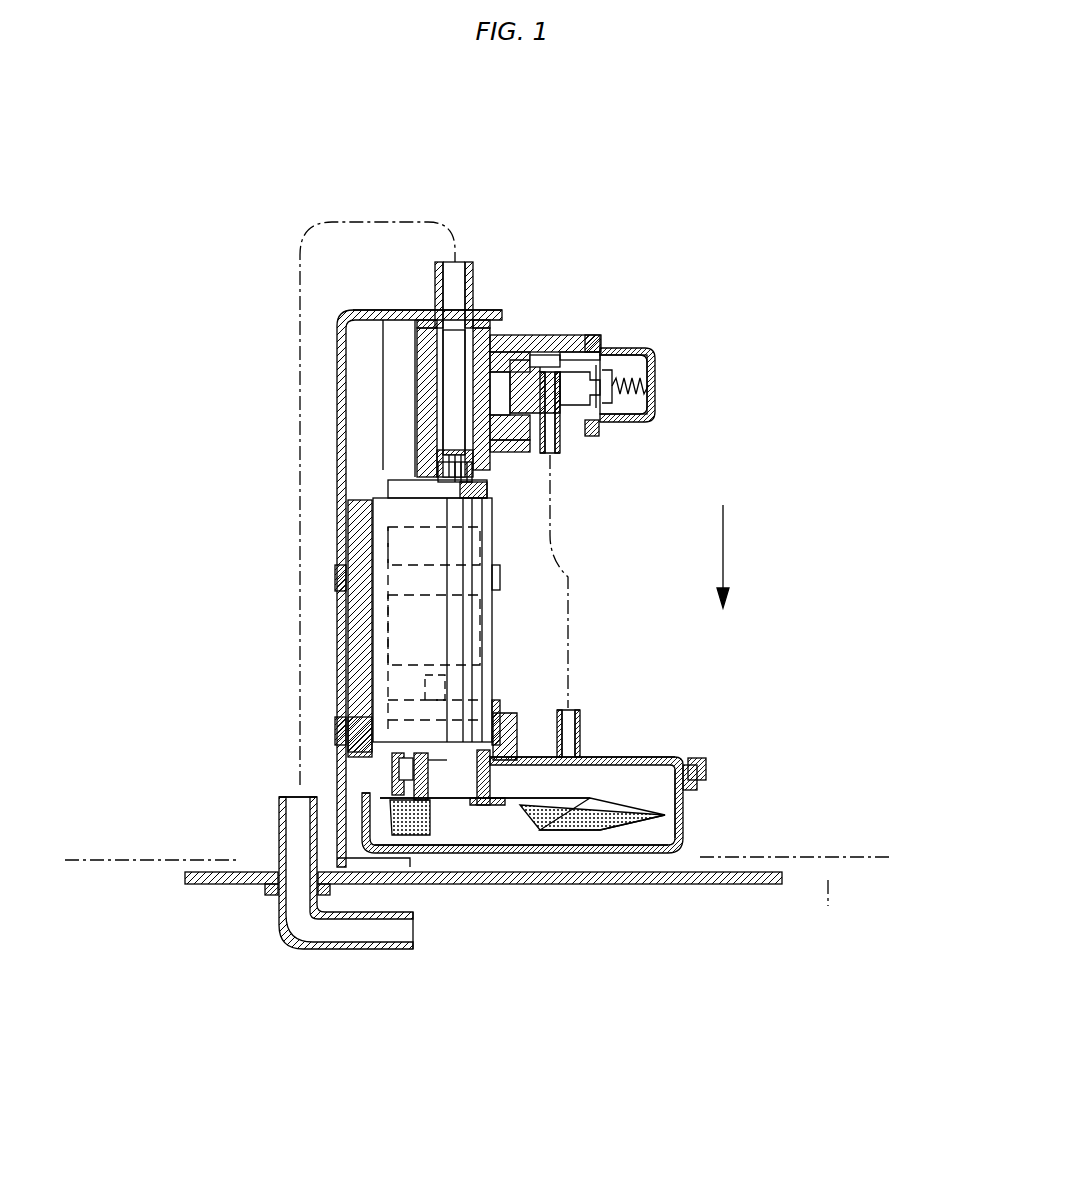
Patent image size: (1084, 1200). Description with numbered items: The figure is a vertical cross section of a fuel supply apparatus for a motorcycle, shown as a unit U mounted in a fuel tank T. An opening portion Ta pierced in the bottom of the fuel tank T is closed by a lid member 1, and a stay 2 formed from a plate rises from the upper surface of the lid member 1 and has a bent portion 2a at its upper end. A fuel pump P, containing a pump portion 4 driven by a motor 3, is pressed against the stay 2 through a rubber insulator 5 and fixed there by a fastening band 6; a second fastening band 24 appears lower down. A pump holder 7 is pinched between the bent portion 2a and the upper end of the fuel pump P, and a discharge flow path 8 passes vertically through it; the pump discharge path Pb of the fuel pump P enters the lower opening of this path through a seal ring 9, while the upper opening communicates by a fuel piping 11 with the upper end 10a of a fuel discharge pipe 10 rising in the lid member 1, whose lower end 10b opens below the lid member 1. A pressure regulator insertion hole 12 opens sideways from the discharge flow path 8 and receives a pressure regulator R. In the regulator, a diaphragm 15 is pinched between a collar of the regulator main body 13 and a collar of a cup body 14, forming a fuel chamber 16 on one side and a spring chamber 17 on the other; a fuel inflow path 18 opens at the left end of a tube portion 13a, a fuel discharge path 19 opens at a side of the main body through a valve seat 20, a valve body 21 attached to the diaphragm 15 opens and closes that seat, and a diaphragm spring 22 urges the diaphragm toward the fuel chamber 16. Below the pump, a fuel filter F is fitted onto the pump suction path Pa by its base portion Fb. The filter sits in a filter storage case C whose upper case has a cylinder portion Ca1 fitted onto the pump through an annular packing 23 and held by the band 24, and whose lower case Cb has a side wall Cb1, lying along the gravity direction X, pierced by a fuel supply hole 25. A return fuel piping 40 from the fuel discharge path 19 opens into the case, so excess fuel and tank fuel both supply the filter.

The lid member 1 is at (710, 884).
The stay 2 is at (343, 410).
The bent portion 2a is at (416, 310).
The motor 3 is at (480, 547).
The pump portion 4 is at (500, 680).
The insulator 5 is at (350, 522).
The fastening band 6 is at (336, 578).
The pump holder 7 is at (415, 352).
The discharge flow path 8 is at (430, 392).
The seal ring 9 is at (426, 448).
The fuel discharge pipe 10 is at (283, 947).
The upper end of fuel discharge pipe 10a is at (290, 797).
The lower end of fuel discharge pipe 10b is at (413, 925).
The fuel piping 11 is at (300, 437).
The pressure regulator insertion hole 12 is at (497, 314).
The regulator main body 13 is at (565, 443).
The tube portion 13a is at (518, 446).
The cup body 14 is at (645, 348).
The diaphragm 15 is at (600, 358).
The fuel chamber 16 is at (575, 342).
The spring chamber 17 is at (655, 370).
The fuel inflow path 18 is at (505, 338).
The fuel discharge path 19 is at (566, 606).
The valve seat 20 is at (548, 352).
The valve body 21 is at (610, 422).
The diaphragm spring 22 is at (655, 384).
The annular packing 23 is at (510, 720).
The fastening band 24 is at (340, 732).
The fuel supply hole 25 is at (690, 828).
The return fuel piping 40 is at (568, 585).
The filter storage case C is at (665, 757).
The cylinder portion Ca1 is at (516, 740).
The lower case Cb is at (633, 853).
The side wall Cb1 is at (690, 810).
The fuel filter F is at (573, 830).
The base portion Fb is at (490, 775).
The fuel pump P is at (495, 612).
The pump suction path Pa is at (411, 776).
The pump discharge path Pb is at (438, 466).
The pressure regulator R is at (655, 412).
The fuel tank T is at (477, 898).
The opening portion Ta is at (689, 845).
The fuel supply unit U is at (370, 97).
The gravity force direction X is at (718, 574).